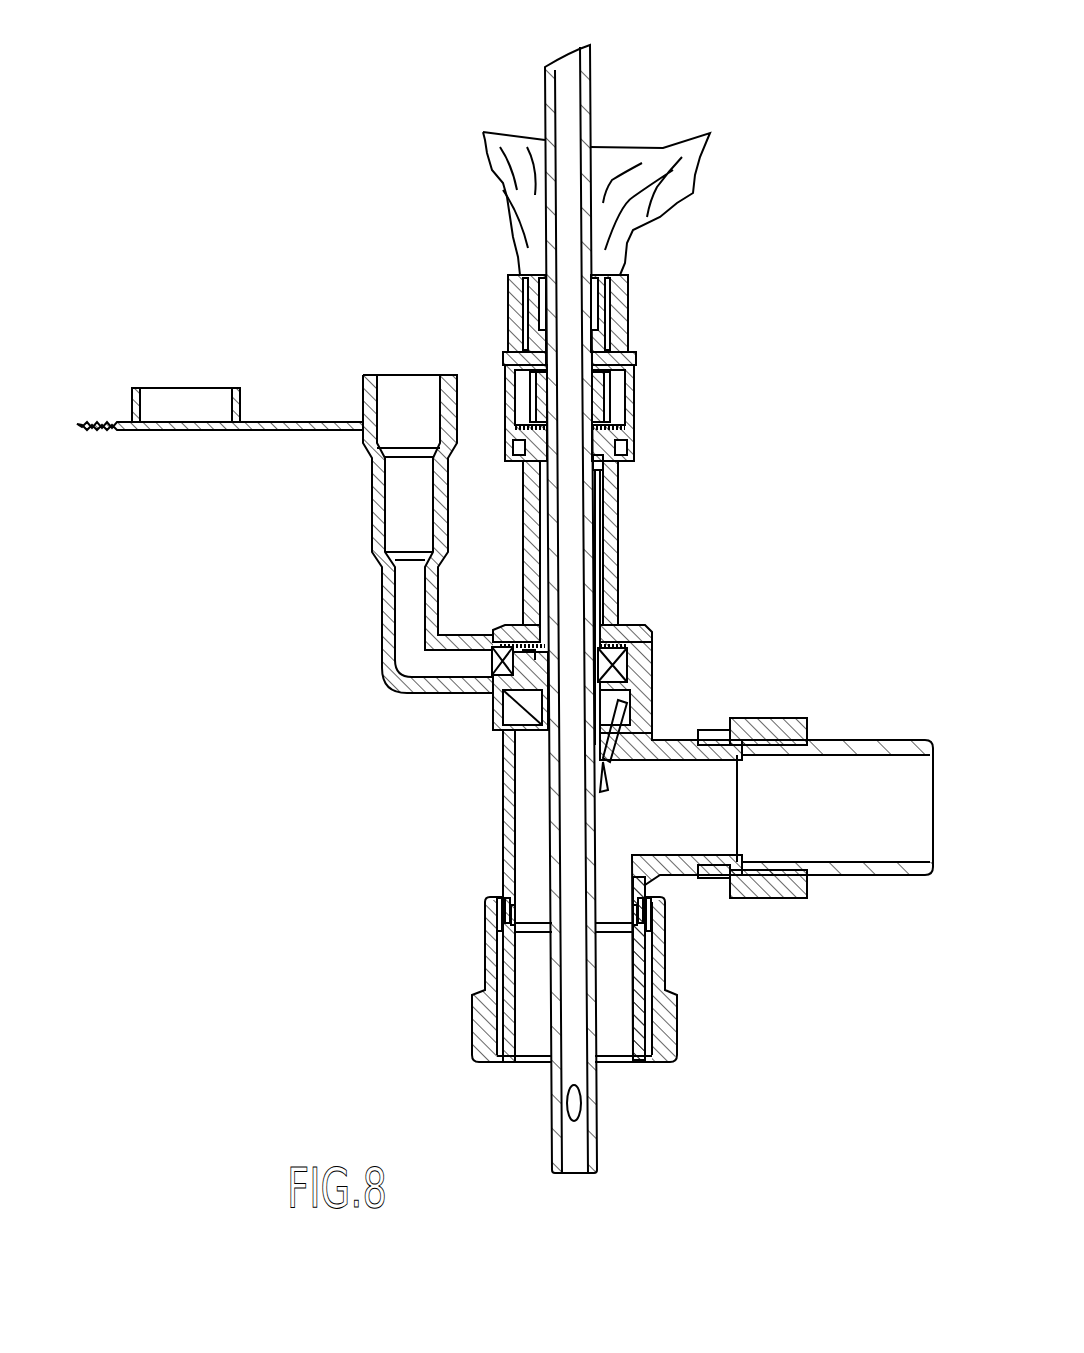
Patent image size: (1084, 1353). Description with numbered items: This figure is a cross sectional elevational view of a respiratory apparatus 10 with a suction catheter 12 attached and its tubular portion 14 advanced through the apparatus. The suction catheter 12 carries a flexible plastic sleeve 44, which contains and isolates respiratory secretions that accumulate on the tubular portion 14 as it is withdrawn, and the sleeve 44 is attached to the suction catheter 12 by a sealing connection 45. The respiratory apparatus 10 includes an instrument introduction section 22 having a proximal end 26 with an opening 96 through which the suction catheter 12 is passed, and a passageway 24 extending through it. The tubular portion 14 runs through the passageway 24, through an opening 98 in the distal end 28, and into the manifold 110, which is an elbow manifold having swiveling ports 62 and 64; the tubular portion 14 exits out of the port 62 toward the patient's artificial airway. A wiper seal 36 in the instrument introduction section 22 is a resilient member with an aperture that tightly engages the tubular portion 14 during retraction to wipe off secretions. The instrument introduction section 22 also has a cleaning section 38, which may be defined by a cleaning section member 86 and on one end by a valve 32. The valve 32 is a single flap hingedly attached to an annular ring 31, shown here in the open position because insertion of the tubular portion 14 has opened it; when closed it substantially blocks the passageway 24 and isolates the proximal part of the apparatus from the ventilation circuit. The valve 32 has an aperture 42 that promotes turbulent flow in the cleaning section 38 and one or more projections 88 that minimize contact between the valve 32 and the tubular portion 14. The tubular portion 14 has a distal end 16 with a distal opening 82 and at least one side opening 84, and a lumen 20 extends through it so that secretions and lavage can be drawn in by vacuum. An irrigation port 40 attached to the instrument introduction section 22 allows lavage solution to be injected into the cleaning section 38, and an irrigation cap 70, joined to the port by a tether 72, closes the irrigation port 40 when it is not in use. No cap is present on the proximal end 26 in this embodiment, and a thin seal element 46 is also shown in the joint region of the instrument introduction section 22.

The respiratory apparatus 10 is at (258, 712).
The suction catheter 12 is at (635, 440).
The tubular portion 14 is at (557, 872).
The distal end 16 is at (600, 1140).
The lumen 20 is at (560, 822).
The instrument introduction section 22 is at (652, 645).
The passageway 24 is at (598, 553).
The proximal end 26 is at (618, 515).
The distal end 28 is at (495, 713).
The annular ring 31 is at (635, 703).
The valve 32 is at (657, 735).
The wiper seal 36 is at (630, 625).
The cleaning section 38 is at (600, 662).
The irrigation port 40 is at (377, 518).
The aperture 42 is at (623, 762).
The flexible plastic sleeve 44 is at (690, 193).
The sealing connection 45 is at (613, 328).
The seal 46 is at (512, 712).
The swiveling port 62 is at (645, 1065).
The swiveling port 64 is at (848, 872).
The irrigation cap 70 is at (178, 430).
The tether 72 is at (297, 422).
The distal opening 82 is at (575, 1173).
The side opening 84 is at (572, 1103).
The cleaning section member 86 is at (527, 655).
The projection 88 is at (603, 775).
The opening 96 is at (598, 477).
The opening 98 is at (542, 725).
The manifold 110 is at (677, 862).